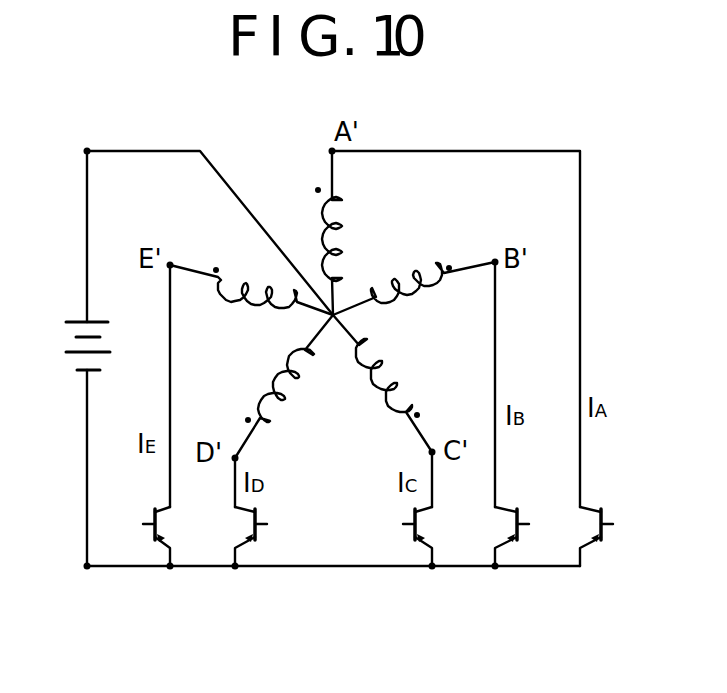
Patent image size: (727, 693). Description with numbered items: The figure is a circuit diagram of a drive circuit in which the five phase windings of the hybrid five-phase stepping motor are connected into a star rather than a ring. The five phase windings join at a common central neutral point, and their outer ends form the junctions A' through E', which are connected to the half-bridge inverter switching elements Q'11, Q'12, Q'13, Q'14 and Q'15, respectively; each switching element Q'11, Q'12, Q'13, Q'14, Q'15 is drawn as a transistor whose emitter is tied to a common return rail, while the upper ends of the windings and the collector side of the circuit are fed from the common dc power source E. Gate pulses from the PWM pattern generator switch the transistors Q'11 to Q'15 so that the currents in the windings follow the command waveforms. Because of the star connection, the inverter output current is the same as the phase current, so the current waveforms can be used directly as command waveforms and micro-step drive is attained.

The switching element Q'11 is at (627, 536).
The switching element Q'12 is at (537, 522).
The switching element Q'13 is at (447, 536).
The switching element Q'14 is at (284, 536).
The switching element Q'15 is at (188, 536).
The dc power source E is at (71, 346).